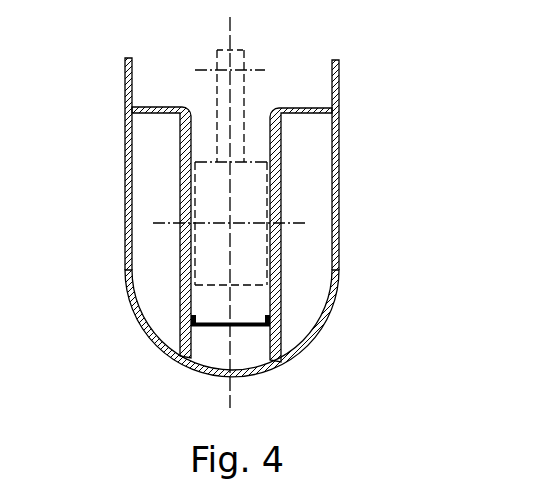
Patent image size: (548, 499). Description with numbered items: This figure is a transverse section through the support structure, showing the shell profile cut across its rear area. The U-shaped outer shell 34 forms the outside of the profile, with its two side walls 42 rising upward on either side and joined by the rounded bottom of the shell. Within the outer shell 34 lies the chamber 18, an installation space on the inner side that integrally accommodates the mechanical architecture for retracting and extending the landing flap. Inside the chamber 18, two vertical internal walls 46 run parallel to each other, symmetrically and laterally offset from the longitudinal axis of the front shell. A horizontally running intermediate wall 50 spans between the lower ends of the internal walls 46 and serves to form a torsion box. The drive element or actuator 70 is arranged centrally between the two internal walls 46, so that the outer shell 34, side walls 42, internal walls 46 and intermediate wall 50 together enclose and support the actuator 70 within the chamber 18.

The chamber 18 is at (172, 88).
The U-shaped outer shell 34 is at (312, 338).
The side walls 42 is at (340, 142).
The internal walls 46 is at (180, 246).
The intermediate wall 50 is at (212, 327).
The actuator 70 is at (237, 100).